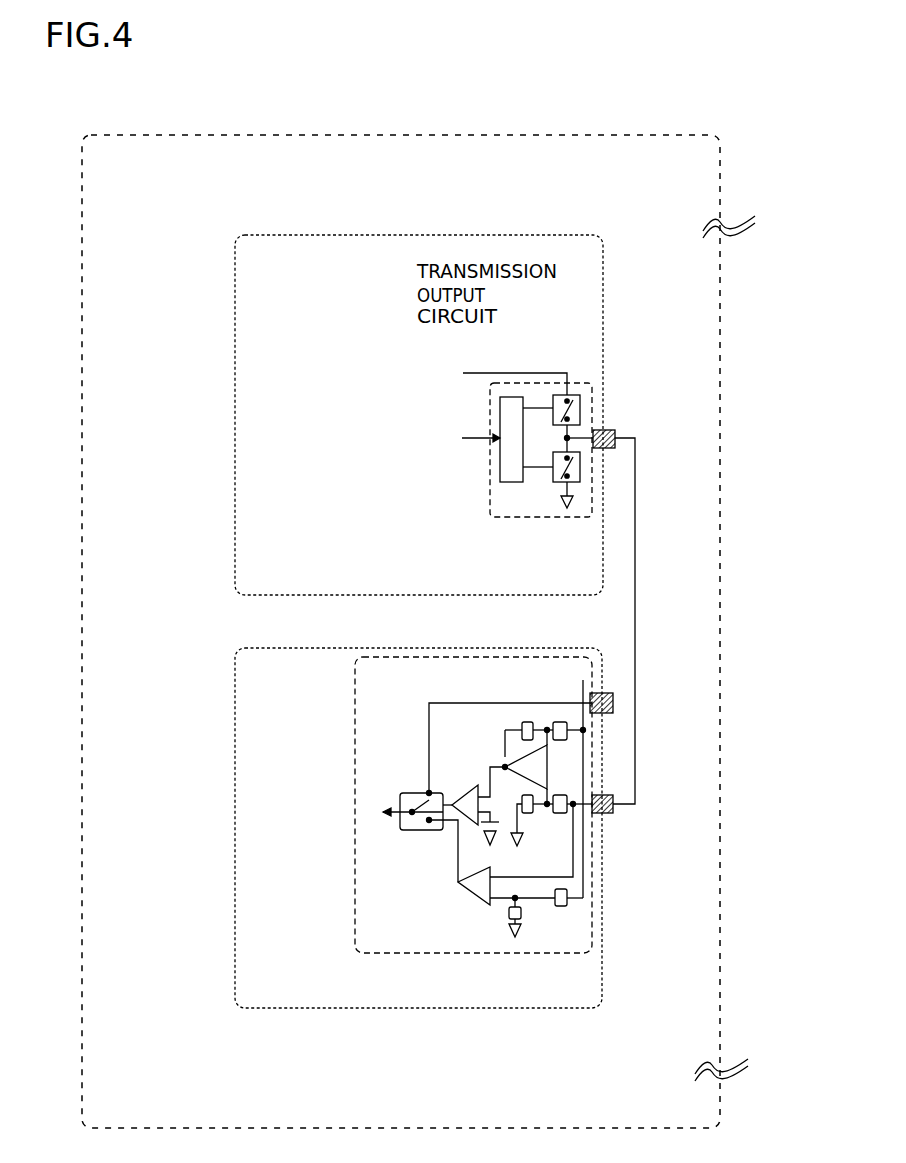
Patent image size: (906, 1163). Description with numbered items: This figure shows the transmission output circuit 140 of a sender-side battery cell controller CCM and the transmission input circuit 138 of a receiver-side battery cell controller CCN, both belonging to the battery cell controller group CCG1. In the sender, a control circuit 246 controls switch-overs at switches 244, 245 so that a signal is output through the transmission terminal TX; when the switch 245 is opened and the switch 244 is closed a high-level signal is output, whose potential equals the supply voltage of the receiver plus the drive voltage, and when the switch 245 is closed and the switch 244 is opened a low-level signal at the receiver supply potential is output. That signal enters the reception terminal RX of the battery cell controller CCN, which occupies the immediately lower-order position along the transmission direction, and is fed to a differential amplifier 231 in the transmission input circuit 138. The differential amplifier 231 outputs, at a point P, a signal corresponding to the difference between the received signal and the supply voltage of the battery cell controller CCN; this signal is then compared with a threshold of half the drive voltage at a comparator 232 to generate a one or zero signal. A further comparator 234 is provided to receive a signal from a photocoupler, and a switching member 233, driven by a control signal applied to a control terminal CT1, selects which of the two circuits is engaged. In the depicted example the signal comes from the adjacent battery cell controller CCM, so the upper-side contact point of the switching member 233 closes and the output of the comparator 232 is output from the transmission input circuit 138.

The transmission output circuit 140 is at (585, 383).
The switch 244 is at (580, 412).
The switch 245 is at (558, 485).
The control circuit 246 is at (498, 472).
The transmission input circuit 138 is at (453, 658).
The differential amplifier 231 is at (543, 768).
The comparator 232 is at (484, 812).
The switching member 233 is at (420, 837).
The comparator 234 is at (462, 885).
The battery cell controller group CCG1 is at (720, 195).
The sender-side battery cell controller CCM is at (419, 415).
The receiver-side battery cell controller CCN is at (418, 828).
The transmission terminal TX is at (614, 605).
The reception terminal RX is at (614, 825).
The control terminal CT1 is at (603, 693).
The point P is at (500, 764).